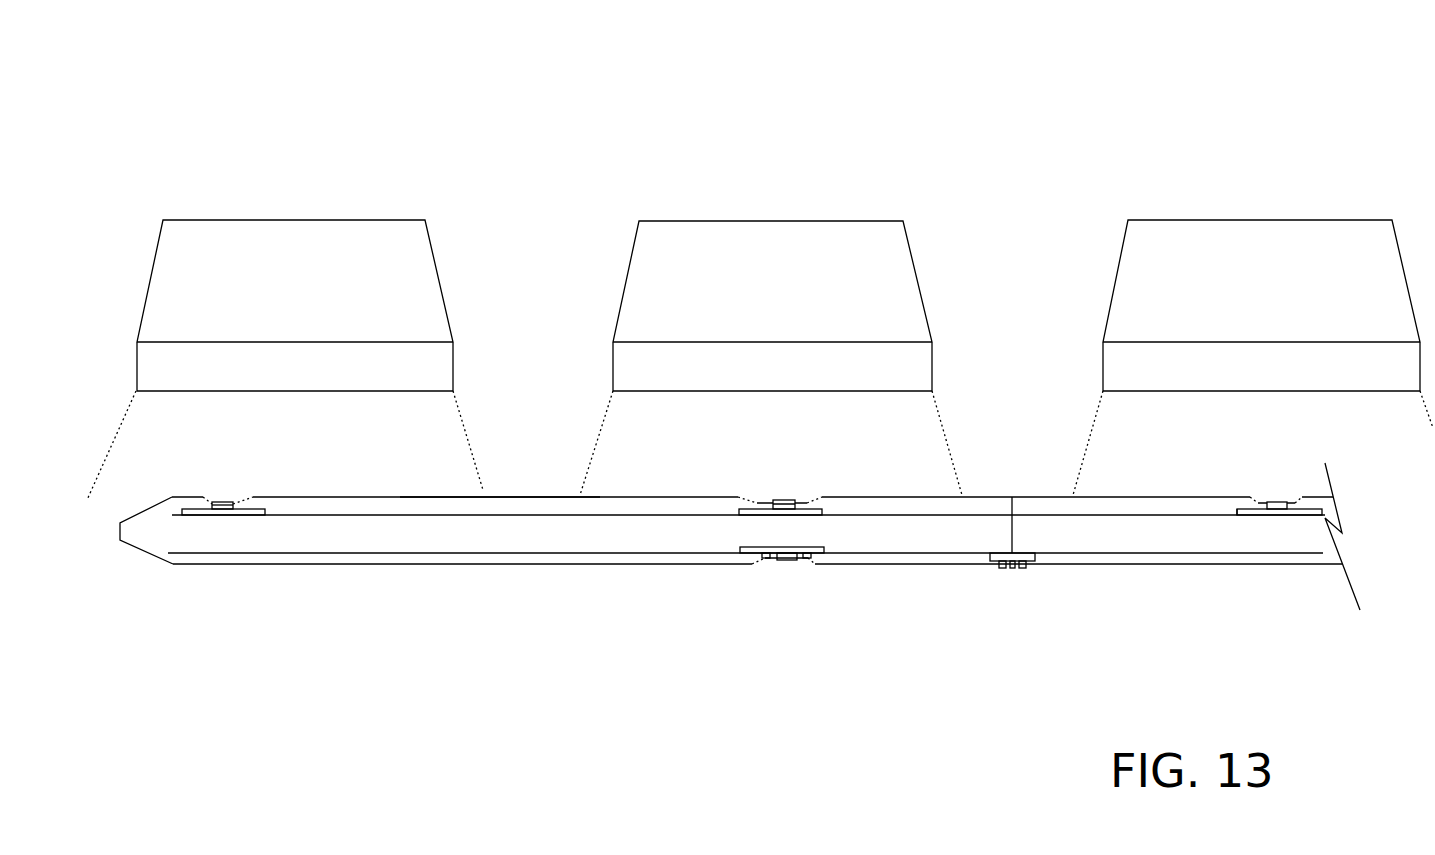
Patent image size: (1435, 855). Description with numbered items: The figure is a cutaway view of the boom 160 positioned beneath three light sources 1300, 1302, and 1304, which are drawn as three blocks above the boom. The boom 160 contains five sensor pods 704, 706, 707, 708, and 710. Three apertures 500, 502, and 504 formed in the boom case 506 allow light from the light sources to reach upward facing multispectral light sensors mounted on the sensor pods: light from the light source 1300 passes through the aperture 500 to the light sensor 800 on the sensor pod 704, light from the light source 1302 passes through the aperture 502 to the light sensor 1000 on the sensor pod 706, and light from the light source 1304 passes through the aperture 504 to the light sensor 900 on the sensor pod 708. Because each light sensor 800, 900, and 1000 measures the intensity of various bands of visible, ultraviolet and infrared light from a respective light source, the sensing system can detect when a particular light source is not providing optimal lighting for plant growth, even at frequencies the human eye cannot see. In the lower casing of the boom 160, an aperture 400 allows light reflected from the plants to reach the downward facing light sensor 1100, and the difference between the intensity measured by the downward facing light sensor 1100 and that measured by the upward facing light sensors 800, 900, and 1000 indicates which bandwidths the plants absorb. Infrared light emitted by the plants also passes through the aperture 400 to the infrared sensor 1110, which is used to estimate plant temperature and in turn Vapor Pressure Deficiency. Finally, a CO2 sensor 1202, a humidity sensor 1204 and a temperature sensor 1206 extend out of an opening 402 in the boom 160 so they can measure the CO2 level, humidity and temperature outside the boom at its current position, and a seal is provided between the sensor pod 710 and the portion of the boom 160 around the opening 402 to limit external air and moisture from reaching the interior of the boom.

The boom 160 is at (335, 567).
The aperture 400 is at (805, 558).
The opening 402 is at (1028, 565).
The aperture 500 is at (243, 500).
The aperture 502 is at (797, 500).
The aperture 504 is at (1280, 502).
The boom case 506 is at (513, 495).
The sensor pod 704 is at (200, 503).
The sensor pod 706 is at (743, 510).
The sensor pod 707 is at (763, 557).
The sensor pod 708 is at (1239, 516).
The sensor pod 710 is at (1013, 497).
The light sensor 800 is at (220, 508).
The light sensor 900 is at (1283, 508).
The light sensor 1000 is at (778, 506).
The downward facing light sensor 1100 is at (785, 558).
The infrared sensor 1110 is at (765, 558).
The CO2 sensor 1202 is at (1011, 568).
The humidity sensor 1204 is at (1002, 567).
The temperature sensor 1206 is at (1019, 568).
The light source 1300 is at (310, 220).
The light source 1302 is at (740, 222).
The light source 1304 is at (1239, 220).